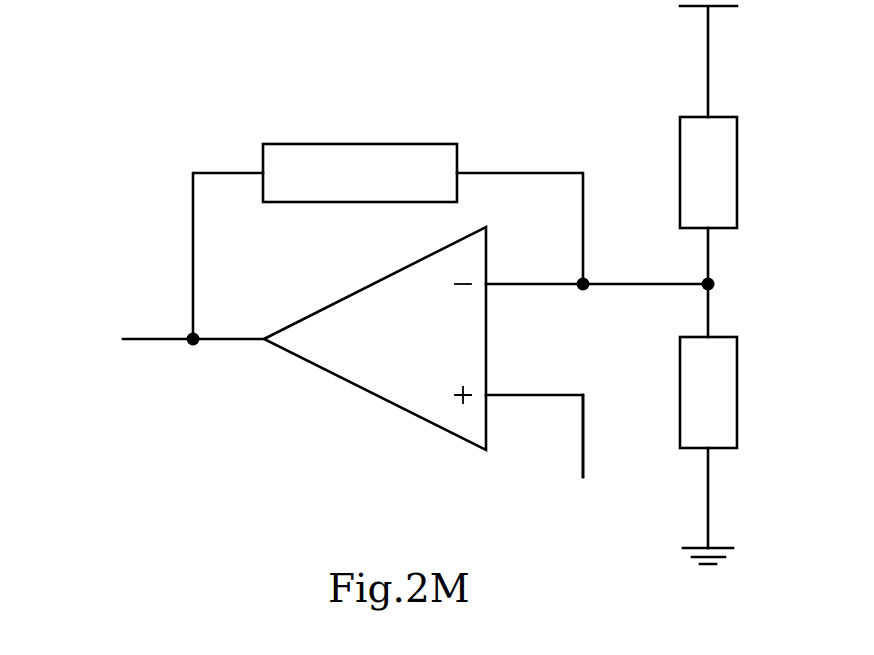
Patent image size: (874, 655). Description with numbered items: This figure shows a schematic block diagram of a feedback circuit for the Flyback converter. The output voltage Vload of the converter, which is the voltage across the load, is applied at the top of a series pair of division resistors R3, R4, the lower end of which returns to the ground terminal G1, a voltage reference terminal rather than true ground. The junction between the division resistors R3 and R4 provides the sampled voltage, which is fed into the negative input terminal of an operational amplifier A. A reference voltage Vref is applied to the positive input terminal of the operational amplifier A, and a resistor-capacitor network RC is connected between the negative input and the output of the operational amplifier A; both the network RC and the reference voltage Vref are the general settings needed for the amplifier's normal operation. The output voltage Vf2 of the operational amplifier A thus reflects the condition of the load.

The output voltage of the operational amplifier Vf2 is at (152, 338).
The resistor-capacitor network RC is at (388, 241).
The operational amplifier A is at (489, 352).
The reference voltage Vref is at (592, 466).
The output voltage Vload is at (662, 61).
The division resistor R3 is at (758, 227).
The division resistor R4 is at (758, 442).
The ground terminal G1 is at (750, 541).